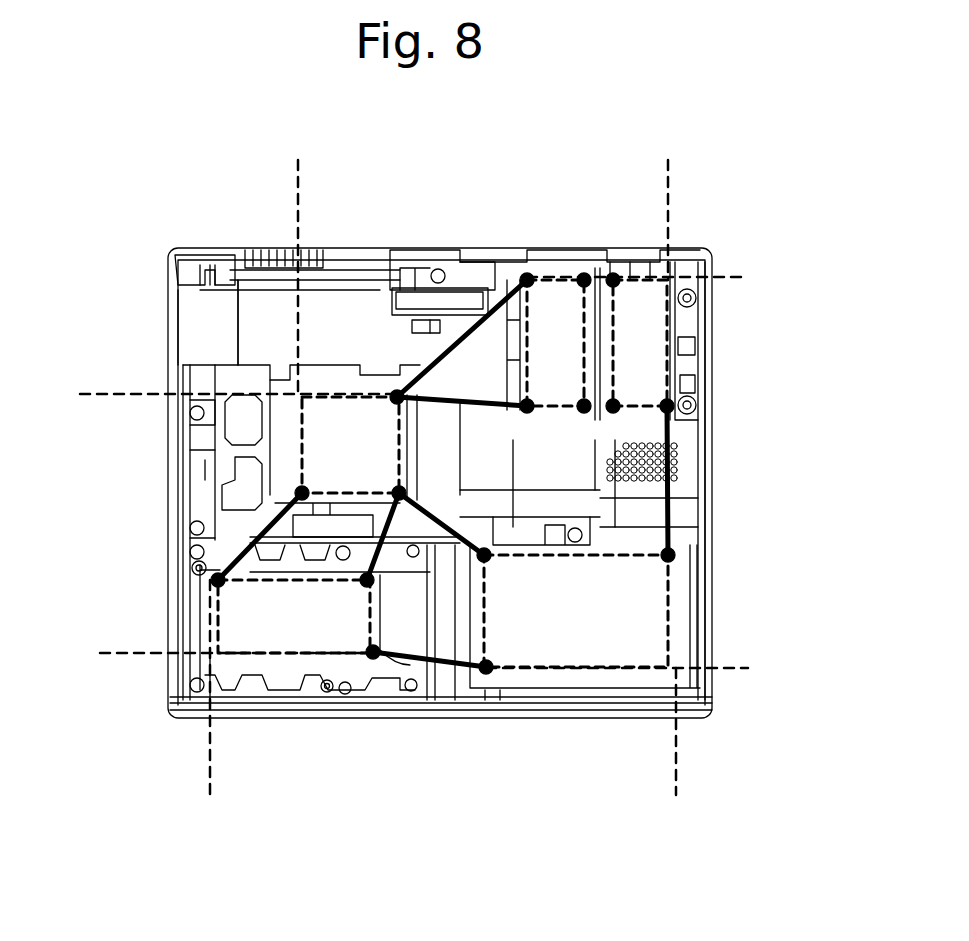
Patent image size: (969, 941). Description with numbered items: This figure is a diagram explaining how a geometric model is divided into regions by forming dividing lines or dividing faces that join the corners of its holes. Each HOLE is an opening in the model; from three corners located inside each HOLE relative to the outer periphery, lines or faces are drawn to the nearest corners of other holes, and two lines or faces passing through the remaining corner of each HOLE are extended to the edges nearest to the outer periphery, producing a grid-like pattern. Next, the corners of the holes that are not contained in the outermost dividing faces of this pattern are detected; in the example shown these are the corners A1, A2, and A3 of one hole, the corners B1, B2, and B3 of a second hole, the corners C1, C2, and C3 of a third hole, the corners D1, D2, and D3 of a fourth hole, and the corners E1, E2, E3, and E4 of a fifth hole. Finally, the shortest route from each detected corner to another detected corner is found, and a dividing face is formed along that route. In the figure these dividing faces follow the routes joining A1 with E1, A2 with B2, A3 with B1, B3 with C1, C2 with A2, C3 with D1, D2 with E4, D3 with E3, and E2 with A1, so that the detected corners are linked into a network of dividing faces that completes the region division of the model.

The corner A1 is at (385, 383).
The corner A2 is at (425, 489).
The corner A3 is at (282, 489).
The corner B1 is at (178, 581).
The corner B2 is at (390, 577).
The corner B3 is at (393, 640).
The corner C1 is at (486, 705).
The corner C2 is at (502, 540).
The corner C3 is at (705, 553).
The corner D1 is at (706, 416).
The corner D2 is at (614, 430).
The corner D3 is at (615, 254).
The corner E1 is at (520, 430).
The corner E2 is at (505, 254).
The corner E3 is at (567, 254).
The corner E4 is at (571, 430).
The hole HOLE is at (332, 450).